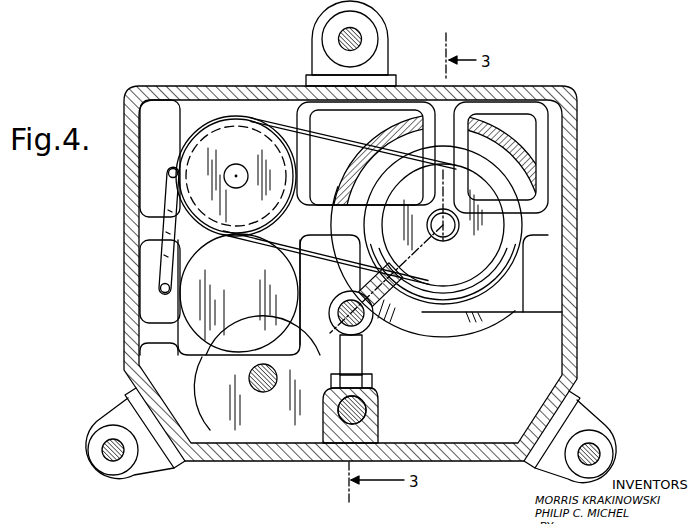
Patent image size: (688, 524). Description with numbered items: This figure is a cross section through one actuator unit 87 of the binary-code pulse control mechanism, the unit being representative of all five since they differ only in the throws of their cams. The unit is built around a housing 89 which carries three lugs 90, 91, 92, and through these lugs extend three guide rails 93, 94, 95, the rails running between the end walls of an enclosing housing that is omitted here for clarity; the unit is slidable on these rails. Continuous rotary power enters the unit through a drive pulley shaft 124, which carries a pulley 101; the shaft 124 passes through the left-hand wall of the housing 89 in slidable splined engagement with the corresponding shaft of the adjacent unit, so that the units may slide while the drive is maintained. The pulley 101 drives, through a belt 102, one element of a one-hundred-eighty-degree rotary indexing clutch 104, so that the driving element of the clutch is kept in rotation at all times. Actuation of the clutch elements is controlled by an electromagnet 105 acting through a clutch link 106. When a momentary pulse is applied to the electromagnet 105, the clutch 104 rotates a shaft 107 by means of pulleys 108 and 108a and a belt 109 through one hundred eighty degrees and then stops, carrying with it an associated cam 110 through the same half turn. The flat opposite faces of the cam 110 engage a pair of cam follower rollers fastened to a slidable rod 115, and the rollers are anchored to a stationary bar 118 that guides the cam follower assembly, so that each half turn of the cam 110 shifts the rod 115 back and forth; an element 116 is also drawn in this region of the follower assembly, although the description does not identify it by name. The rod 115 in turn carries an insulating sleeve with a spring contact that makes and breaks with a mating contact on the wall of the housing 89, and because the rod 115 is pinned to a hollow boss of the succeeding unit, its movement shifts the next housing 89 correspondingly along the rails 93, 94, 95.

The actuator unit 87 is at (238, 84).
The housing 89 is at (124, 278).
The lug 90 is at (318, 22).
The lug 91 is at (98, 421).
The lug 92 is at (594, 419).
The guide rail 93 is at (339, 42).
The guide rail 94 is at (108, 455).
The guide rail 95 is at (600, 455).
The pulley 101 is at (226, 387).
The belt 102 is at (205, 362).
The rotary indexing clutch 104 is at (253, 128).
The electromagnet 105 is at (242, 284).
The clutch link 106 is at (139, 261).
The shaft 107 is at (452, 226).
The pulley 108 is at (474, 190).
The pulley 108a is at (222, 142).
The belt 109 is at (341, 131).
The cam 110 is at (491, 322).
The slidable rod 115 is at (368, 333).
The link 116 is at (362, 358).
The stationary bar 118 is at (368, 409).
The drive pulley shaft 124 is at (265, 392).